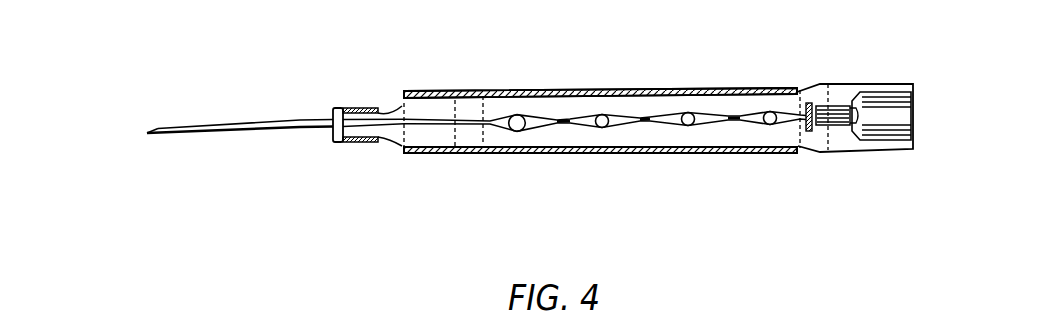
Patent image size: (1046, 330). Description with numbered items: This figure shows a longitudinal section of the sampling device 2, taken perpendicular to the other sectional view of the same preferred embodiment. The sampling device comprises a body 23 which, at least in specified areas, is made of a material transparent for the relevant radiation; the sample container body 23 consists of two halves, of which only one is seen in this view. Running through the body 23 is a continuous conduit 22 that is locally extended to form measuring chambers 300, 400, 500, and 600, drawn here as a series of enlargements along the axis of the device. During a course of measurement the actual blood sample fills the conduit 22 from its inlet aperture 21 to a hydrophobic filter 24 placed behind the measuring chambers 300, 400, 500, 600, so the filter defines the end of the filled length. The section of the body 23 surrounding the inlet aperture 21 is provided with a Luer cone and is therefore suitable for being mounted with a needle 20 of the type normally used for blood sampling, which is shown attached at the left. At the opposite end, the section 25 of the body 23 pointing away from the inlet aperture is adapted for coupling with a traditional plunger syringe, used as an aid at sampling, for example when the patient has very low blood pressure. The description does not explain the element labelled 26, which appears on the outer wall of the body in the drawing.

The sampling device 2 is at (863, 72).
The needle 20 is at (333, 141).
The inlet aperture 21 is at (348, 144).
The conduit 22 is at (391, 140).
The body 23 is at (400, 106).
The hydrophobic filter 24 is at (808, 103).
The section adapted for coupling with a plunger syringe 25 is at (847, 141).
The tube 26 is at (716, 149).
The measuring chamber 300 is at (519, 114).
The measuring chamber 400 is at (604, 114).
The measuring chamber 500 is at (688, 112).
The measuring chamber 600 is at (771, 111).